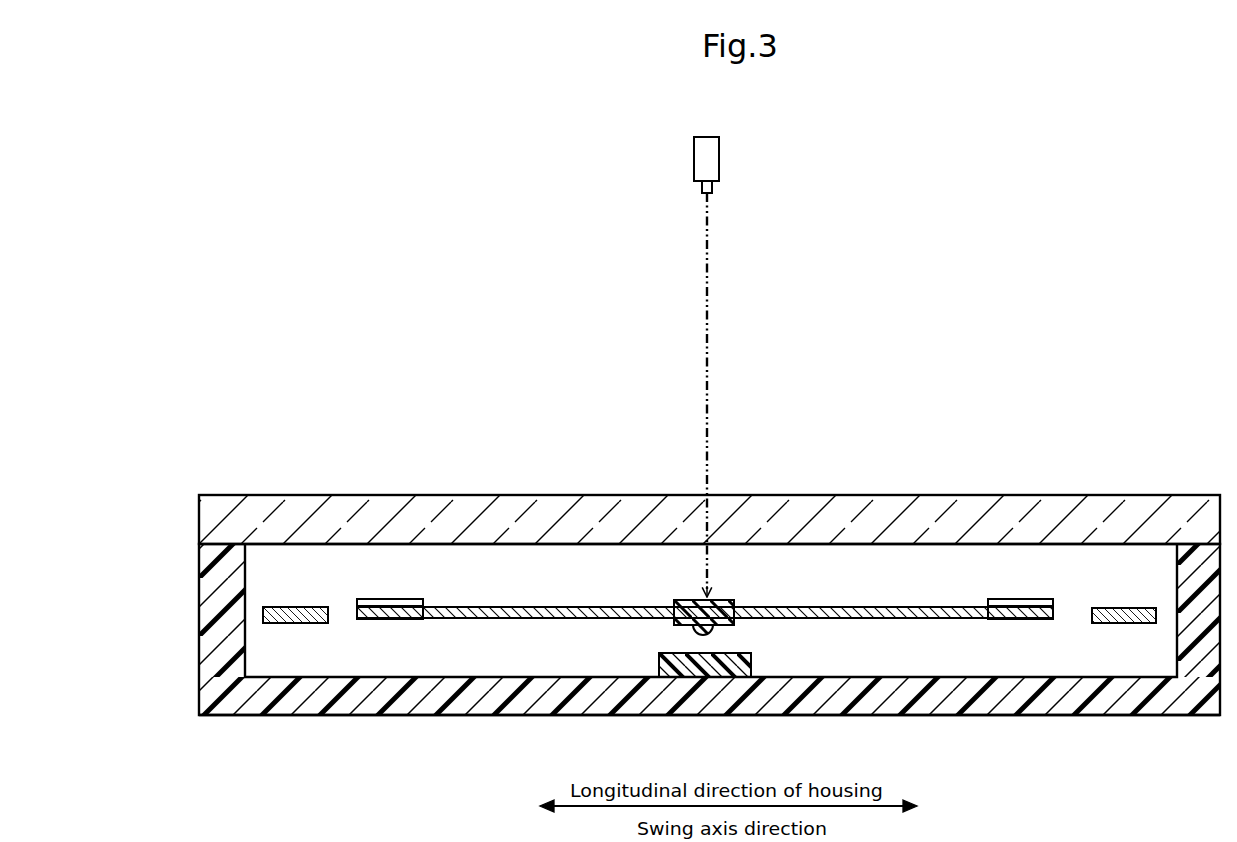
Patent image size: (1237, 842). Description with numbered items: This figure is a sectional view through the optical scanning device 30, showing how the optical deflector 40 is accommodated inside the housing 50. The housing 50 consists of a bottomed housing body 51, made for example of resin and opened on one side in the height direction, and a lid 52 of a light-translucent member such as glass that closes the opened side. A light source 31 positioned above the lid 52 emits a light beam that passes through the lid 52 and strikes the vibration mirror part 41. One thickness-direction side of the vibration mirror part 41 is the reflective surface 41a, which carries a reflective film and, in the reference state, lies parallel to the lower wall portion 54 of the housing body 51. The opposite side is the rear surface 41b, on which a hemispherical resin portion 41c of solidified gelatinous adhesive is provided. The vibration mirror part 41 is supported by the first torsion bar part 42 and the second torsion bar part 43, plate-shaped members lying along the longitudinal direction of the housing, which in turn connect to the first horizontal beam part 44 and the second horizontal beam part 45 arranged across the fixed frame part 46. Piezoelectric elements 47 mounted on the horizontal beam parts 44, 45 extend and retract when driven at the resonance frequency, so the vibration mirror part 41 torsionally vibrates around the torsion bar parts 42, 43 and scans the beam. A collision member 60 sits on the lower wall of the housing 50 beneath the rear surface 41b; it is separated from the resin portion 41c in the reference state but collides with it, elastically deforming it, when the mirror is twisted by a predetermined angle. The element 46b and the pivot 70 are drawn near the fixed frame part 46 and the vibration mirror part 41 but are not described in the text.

The optical scanning device 30 is at (377, 383).
The light source 31 is at (719, 156).
The optical deflector 40 is at (455, 605).
The vibration mirror part 41 is at (674, 600).
The reflective surface 41a is at (726, 600).
The rear surface 41b is at (736, 622).
The resin portion 41c is at (694, 633).
The first torsion bar part 42 is at (540, 612).
The second torsion bar part 43 is at (917, 617).
The first horizontal beam part 44 is at (404, 620).
The second horizontal beam part 45 is at (1003, 620).
The fixed frame part 46 is at (300, 604).
The fixed magnet (lower) 46b is at (306, 623).
The piezoelectric element 47 is at (378, 602).
The housing 50 is at (243, 425).
The housing body 51 is at (212, 582).
The lid 52 is at (223, 505).
The lower wall portion 54 is at (966, 707).
The collision member 60 is at (751, 660).
The pivot 70 is at (671, 623).